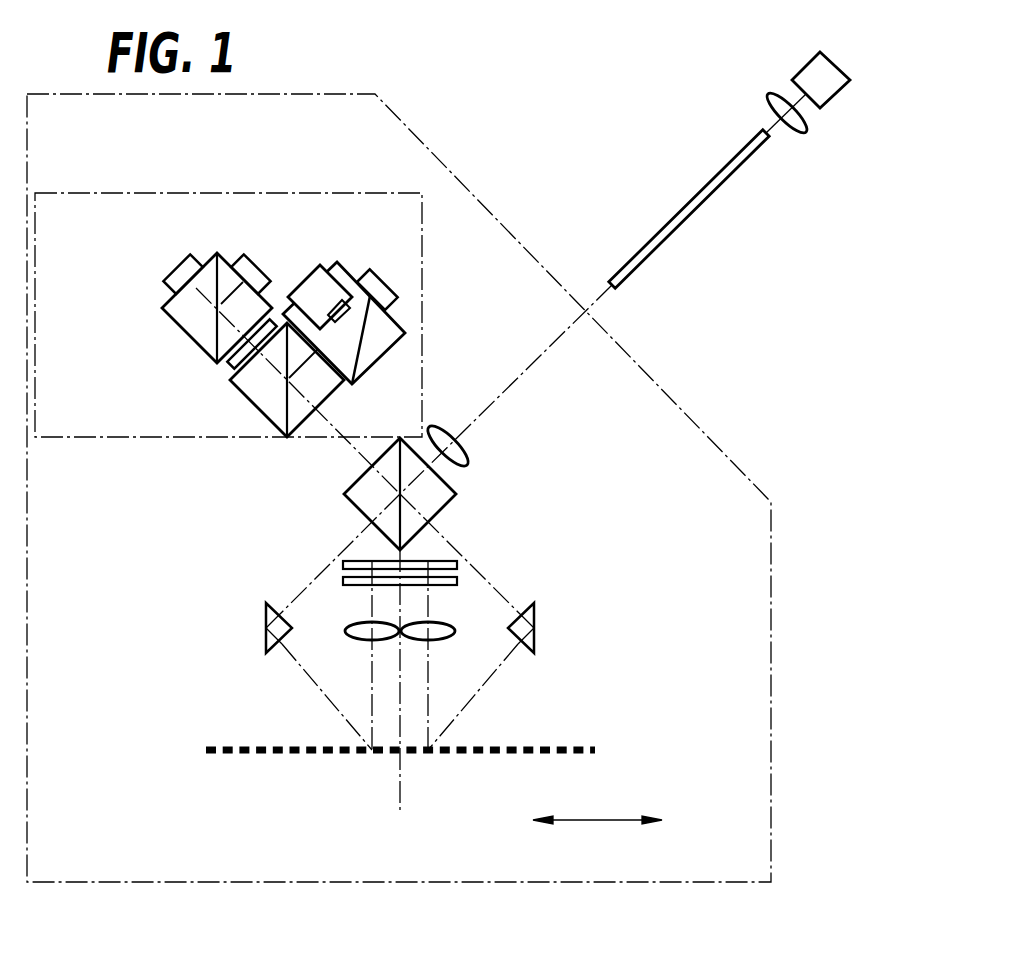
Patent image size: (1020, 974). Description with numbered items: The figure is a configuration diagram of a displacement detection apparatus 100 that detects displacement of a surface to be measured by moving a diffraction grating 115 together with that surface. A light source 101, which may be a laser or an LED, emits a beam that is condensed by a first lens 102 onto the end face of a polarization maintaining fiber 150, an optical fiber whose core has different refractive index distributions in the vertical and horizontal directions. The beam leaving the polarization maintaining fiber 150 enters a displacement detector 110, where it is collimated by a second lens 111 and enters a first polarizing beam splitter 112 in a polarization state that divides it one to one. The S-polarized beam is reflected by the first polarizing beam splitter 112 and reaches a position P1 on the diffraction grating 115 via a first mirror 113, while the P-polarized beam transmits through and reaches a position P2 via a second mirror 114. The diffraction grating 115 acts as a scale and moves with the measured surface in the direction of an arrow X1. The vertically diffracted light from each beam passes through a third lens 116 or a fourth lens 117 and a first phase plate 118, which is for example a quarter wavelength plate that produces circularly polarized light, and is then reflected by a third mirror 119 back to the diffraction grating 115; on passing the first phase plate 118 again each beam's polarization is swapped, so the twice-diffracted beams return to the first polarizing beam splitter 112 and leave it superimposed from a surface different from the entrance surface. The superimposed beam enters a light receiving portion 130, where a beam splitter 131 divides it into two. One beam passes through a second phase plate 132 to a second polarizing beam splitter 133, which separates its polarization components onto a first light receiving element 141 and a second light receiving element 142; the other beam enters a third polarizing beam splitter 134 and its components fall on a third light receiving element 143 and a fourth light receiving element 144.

The displacement detection apparatus 100 is at (568, 130).
The light source 101 is at (830, 70).
The first lens 102 is at (802, 135).
The polarization maintaining fiber 150 is at (712, 190).
The displacement detector 110 is at (730, 452).
The second lens 111 is at (463, 452).
The first polarizing beam splitter 112 is at (370, 493).
The first mirror 113 is at (534, 614).
The second mirror 114 is at (266, 645).
The diffraction grating 115 is at (507, 746).
The third lens 116 is at (453, 633).
The fourth lens 117 is at (347, 633).
The first phase plate 118 is at (343, 580).
The third mirror 119 is at (457, 567).
The light receiving portion 130 is at (423, 263).
The beam splitter 131 is at (260, 393).
The second phase plate 132 is at (237, 362).
The second polarizing beam splitter 133 is at (202, 318).
The third polarizing beam splitter 134 is at (375, 352).
The first light receiving element 141 is at (173, 278).
The second light receiving element 142 is at (258, 262).
The third light receiving element 143 is at (315, 283).
The fourth light receiving element 144 is at (388, 292).
The position P1 is at (428, 752).
The position P2 is at (372, 751).
The arrow X1 is at (602, 822).